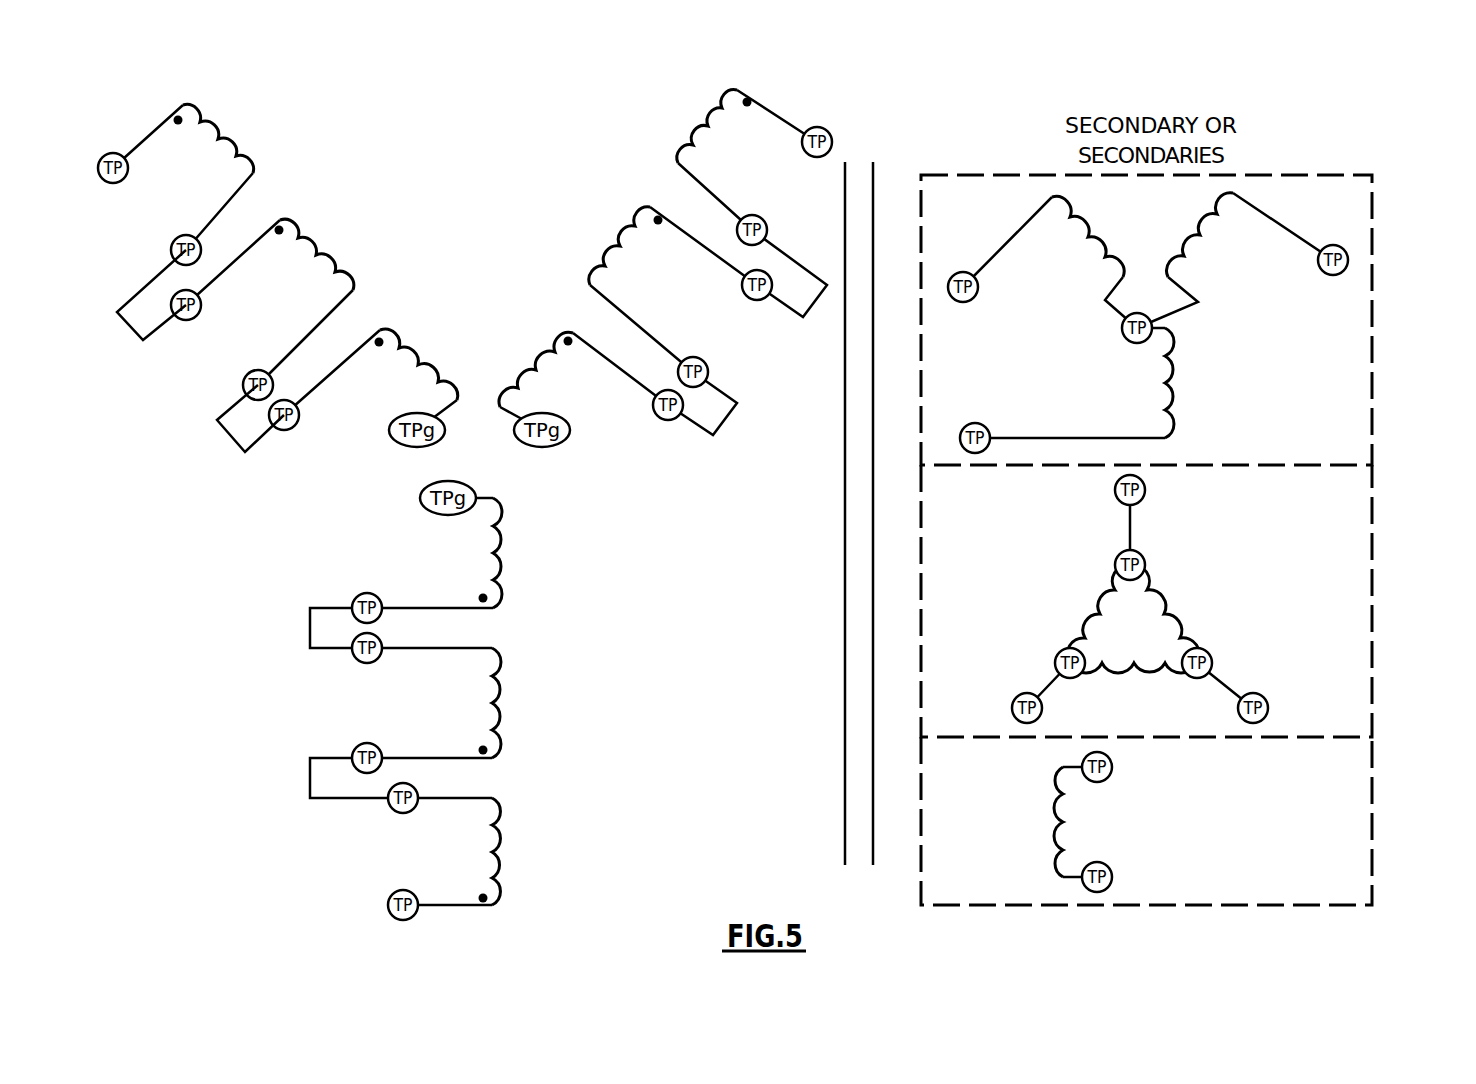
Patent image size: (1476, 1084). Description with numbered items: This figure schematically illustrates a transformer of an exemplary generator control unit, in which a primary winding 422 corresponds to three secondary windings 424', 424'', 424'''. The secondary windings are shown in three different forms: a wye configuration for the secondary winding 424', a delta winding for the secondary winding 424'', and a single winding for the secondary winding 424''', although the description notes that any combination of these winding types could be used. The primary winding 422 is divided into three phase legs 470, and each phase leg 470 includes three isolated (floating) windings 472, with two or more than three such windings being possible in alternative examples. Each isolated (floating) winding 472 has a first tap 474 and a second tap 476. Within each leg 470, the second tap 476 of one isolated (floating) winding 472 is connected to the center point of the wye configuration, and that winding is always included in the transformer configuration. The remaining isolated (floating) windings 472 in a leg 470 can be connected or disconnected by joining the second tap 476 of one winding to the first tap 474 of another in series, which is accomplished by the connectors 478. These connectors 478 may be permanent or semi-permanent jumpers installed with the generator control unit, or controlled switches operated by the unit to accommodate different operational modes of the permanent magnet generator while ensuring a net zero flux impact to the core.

The primary winding 422 is at (437, 183).
The phase leg 470 is at (238, 112).
The isolated (floating) winding 472 is at (240, 152).
The first tap 474 is at (110, 153).
The second tap 476 is at (171, 248).
The connector 478 is at (128, 334).
The secondary winding 424' is at (1184, 320).
The secondary winding 424'' is at (1187, 601).
The secondary winding 424''' is at (1189, 821).